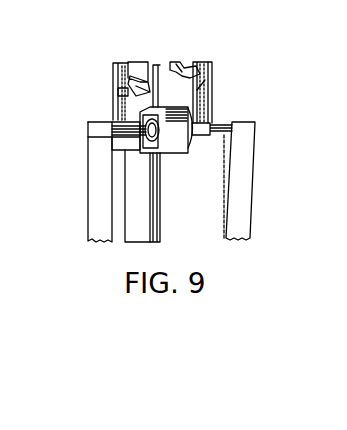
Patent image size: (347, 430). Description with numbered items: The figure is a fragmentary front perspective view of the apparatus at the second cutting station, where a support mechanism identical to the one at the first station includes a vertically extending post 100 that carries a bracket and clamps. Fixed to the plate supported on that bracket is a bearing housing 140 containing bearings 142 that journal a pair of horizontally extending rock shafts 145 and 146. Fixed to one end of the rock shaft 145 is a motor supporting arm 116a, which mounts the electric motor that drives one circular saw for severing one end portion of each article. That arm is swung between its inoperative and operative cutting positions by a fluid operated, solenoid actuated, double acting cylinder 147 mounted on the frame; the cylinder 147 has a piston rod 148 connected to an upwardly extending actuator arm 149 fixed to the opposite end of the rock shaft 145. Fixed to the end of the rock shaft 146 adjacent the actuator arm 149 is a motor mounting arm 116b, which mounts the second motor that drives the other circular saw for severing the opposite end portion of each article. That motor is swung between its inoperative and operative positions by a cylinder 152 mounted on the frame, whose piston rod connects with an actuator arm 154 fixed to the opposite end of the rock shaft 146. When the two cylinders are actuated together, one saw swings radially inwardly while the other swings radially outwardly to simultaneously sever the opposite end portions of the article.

The vertically extending post 100 is at (152, 220).
The motor supporting arm 116a is at (90, 205).
The motor mounting arm 116b is at (240, 212).
The bearing housing 140 is at (186, 152).
The bearings 142 is at (118, 141).
The rock shaft 145 is at (110, 129).
The rock shaft 146 is at (206, 135).
The double acting cylinder 147 is at (182, 62).
The piston rod 148 is at (198, 84).
The actuator arm 149 is at (210, 100).
The cylinder 152 is at (136, 62).
The actuator arm 154 is at (113, 92).